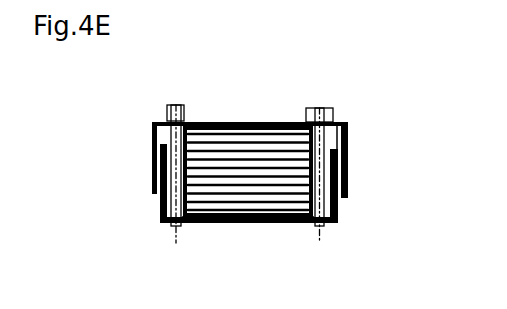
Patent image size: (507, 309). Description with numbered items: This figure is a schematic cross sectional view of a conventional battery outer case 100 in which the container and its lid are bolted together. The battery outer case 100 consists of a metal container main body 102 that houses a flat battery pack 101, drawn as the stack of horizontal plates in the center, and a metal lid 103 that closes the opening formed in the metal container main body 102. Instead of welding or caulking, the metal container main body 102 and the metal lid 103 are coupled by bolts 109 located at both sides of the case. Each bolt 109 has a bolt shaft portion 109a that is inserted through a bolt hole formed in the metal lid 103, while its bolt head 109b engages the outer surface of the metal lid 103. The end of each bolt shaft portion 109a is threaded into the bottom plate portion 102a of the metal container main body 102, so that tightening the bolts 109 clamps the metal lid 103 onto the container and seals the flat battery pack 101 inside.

The battery outer case 100 is at (254, 152).
The flat battery pack 101 is at (215, 221).
The metal container main body 102 is at (270, 222).
The bottom plate portion 102a is at (296, 222).
The metal lid 103 is at (266, 119).
The bolt 109 is at (158, 111).
The bolt shaft portion 109a is at (152, 181).
The bolt head 109b is at (200, 83).